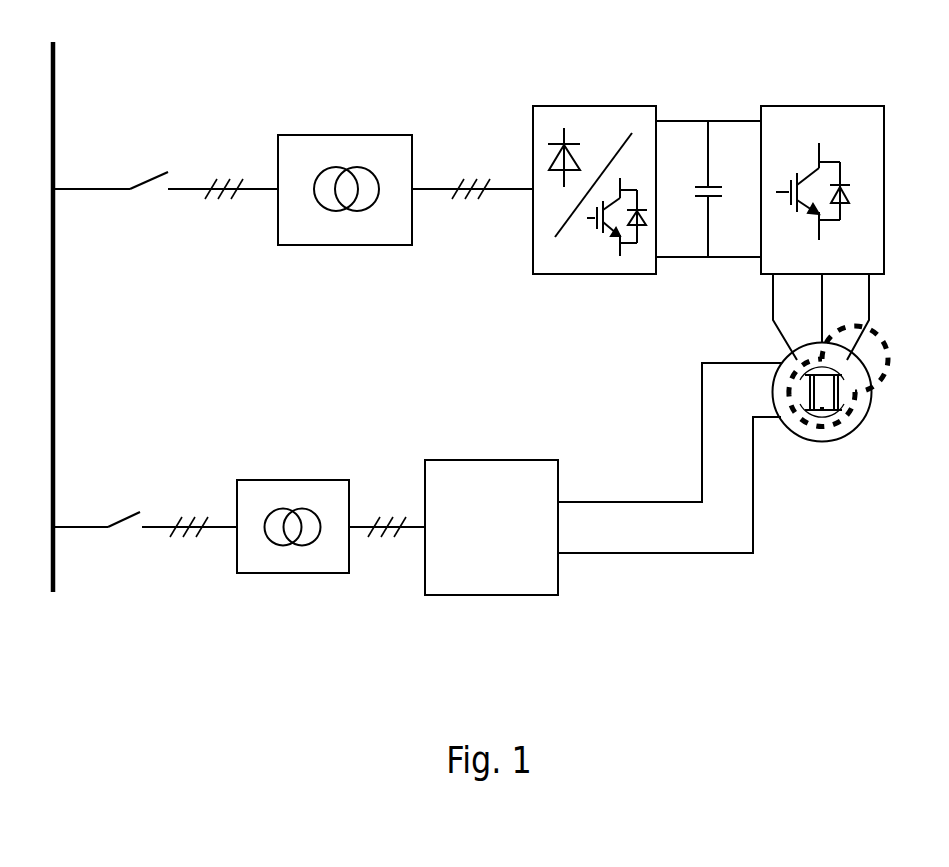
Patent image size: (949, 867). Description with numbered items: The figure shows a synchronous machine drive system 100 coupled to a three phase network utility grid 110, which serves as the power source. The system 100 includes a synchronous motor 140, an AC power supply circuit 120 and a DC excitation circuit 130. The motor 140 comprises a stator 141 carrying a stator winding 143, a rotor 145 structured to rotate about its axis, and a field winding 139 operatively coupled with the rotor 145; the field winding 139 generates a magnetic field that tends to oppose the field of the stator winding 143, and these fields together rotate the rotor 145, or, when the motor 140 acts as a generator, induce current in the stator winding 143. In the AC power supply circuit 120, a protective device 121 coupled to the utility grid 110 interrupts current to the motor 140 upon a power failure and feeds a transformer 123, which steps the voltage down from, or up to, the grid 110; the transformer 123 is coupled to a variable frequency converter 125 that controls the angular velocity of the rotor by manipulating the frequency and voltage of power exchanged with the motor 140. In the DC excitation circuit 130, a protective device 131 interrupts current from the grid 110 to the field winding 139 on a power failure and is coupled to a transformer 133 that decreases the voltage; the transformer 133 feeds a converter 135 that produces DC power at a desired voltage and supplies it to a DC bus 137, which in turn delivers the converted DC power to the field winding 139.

The synchronous machine drive system 100 is at (852, 523).
The three phase network utility grid 110 is at (56, 300).
The AC power supply circuit 120 is at (447, 122).
The protective device 121 is at (150, 181).
The transformer 123 is at (303, 135).
The variable frequency converter 125 is at (550, 287).
The DC excitation circuit 130 is at (247, 600).
The protective device 131 is at (130, 522).
The transformer 133 is at (327, 574).
The converter 135 is at (545, 597).
The DC bus 137 is at (713, 558).
The field winding 139 is at (843, 378).
The synchronous motor 140 is at (826, 390).
The stator 141 is at (788, 365).
The stator winding 143 is at (842, 358).
The rotor 145 is at (820, 408).